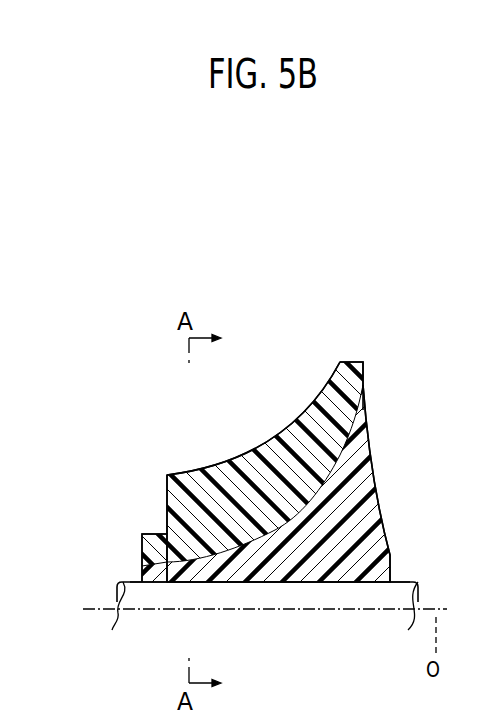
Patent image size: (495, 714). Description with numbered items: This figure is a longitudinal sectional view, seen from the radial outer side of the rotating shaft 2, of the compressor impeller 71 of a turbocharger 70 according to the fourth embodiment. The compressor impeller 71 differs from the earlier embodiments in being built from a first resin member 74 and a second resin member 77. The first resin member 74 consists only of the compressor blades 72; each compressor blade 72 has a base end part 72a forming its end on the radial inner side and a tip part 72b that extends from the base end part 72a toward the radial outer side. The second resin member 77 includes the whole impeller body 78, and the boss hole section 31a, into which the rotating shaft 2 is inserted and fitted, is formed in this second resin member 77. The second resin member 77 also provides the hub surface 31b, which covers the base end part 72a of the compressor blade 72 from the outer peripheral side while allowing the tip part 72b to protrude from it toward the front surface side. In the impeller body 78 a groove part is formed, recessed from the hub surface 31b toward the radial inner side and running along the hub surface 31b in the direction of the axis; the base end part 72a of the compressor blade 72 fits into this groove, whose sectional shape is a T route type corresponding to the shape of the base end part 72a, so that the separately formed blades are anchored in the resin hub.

The rotating shaft 2 is at (128, 598).
The boss hole section 31a is at (348, 583).
The hub surface 31b is at (156, 535).
The turbocharger 70 is at (324, 303).
The compressor impeller 71 is at (269, 378).
The compressor blade 72 is at (218, 469).
The base end part 72a is at (170, 552).
The tip part 72b is at (168, 494).
The first resin member 74 is at (293, 500).
The second resin member 77 is at (368, 507).
The impeller body 78 is at (368, 464).